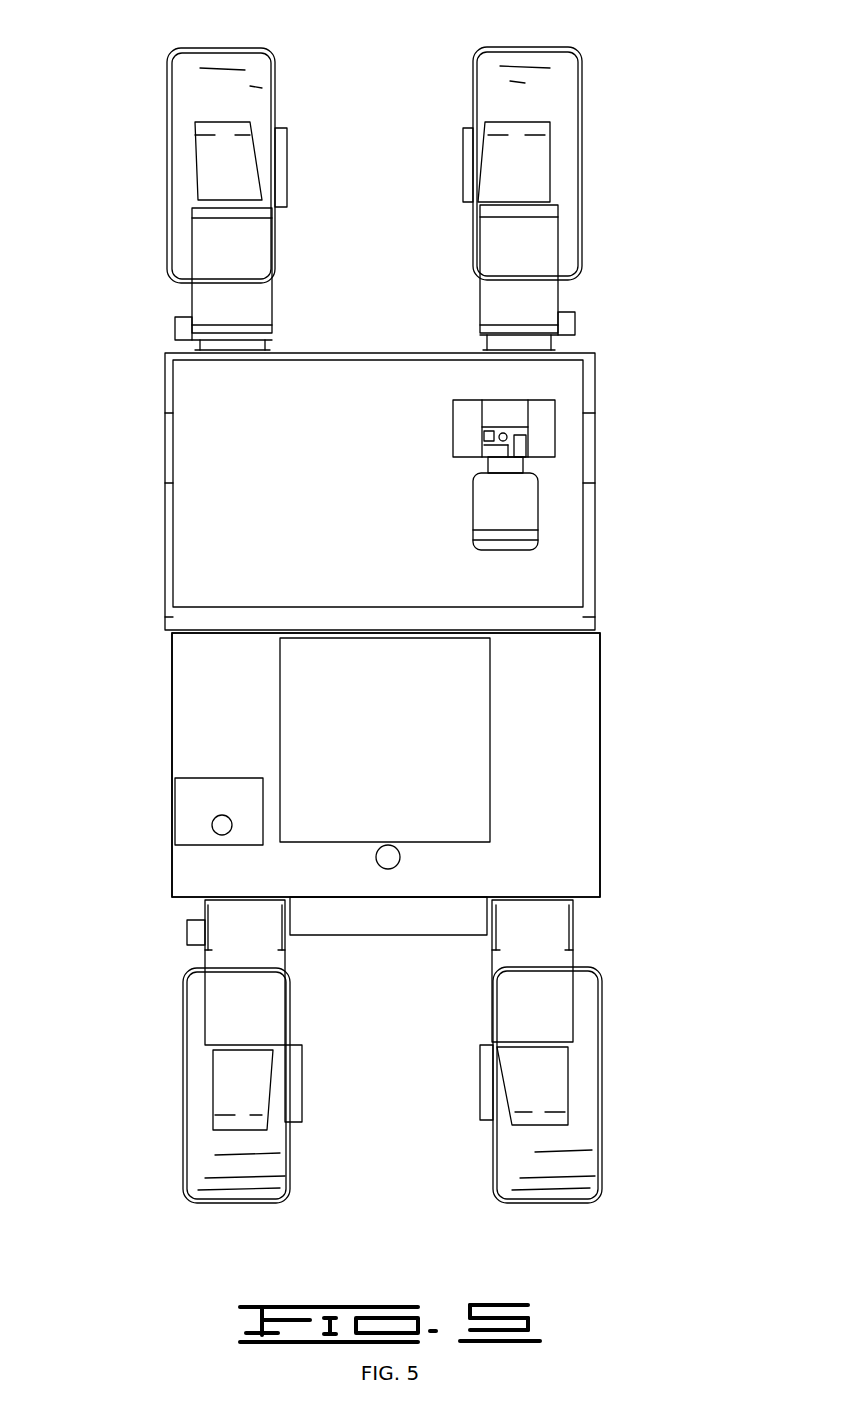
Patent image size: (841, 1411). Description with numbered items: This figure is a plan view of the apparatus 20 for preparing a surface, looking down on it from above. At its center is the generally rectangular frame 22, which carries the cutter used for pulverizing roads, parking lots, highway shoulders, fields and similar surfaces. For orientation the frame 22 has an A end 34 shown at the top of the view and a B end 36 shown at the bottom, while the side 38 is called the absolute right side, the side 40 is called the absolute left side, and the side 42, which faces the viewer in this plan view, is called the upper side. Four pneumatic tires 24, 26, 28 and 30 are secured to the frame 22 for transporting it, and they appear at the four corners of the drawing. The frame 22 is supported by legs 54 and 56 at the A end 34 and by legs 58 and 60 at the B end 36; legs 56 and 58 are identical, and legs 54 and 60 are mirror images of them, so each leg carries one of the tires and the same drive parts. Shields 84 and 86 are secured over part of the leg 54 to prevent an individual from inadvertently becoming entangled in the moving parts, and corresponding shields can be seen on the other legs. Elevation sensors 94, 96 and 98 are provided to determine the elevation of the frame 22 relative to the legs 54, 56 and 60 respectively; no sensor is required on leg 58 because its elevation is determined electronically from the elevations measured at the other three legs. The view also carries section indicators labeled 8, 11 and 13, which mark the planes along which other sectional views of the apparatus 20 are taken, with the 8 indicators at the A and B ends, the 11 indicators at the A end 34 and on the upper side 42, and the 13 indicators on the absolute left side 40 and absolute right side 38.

The section line 8- 8 is at (552, 33).
The section line 11- 11 is at (425, 302).
The section line 13- 13 is at (160, 500).
The apparatus for preparing a surface 20 is at (612, 712).
The frame 22 is at (585, 760).
The pneumatic tire 24 is at (215, 48).
The pneumatic tire 26 is at (263, 1193).
The pneumatic tire 28 is at (500, 1193).
The pneumatic tire 30 is at (478, 55).
The A end of the frame 34 is at (318, 352).
The B end of the frame 36 is at (437, 938).
The absolute right side of the frame 38 is at (598, 657).
The absolute left side of the frame 40 is at (170, 665).
The upper side of the frame 42 is at (467, 805).
The leg 54 is at (530, 179).
The leg 56 is at (173, 175).
The leg 58 is at (554, 1076).
The leg 60 is at (200, 1070).
The shield 84 is at (527, 268).
The shield 86 is at (525, 165).
The elevation sensor 94 is at (577, 320).
The elevation sensor 96 is at (175, 318).
The elevation sensor 98 is at (187, 945).